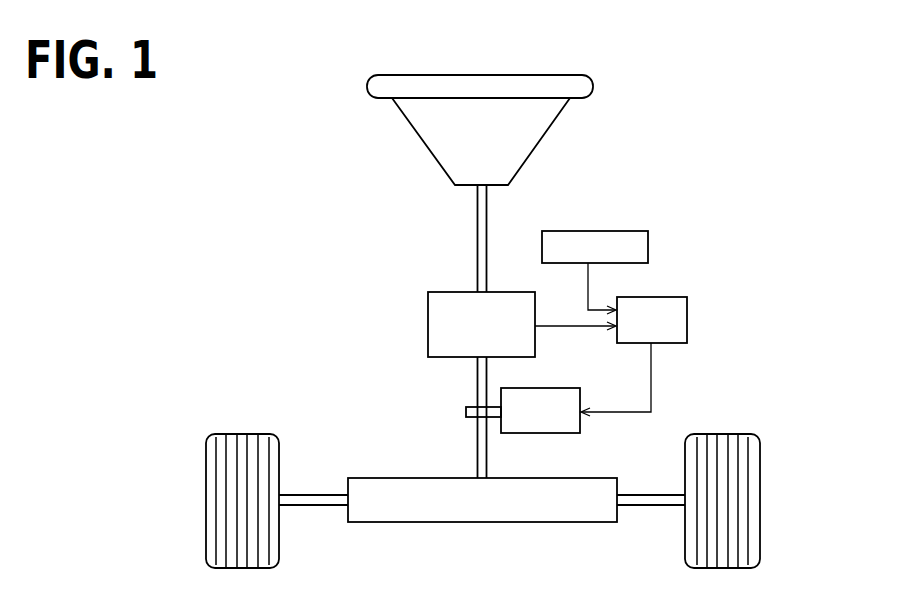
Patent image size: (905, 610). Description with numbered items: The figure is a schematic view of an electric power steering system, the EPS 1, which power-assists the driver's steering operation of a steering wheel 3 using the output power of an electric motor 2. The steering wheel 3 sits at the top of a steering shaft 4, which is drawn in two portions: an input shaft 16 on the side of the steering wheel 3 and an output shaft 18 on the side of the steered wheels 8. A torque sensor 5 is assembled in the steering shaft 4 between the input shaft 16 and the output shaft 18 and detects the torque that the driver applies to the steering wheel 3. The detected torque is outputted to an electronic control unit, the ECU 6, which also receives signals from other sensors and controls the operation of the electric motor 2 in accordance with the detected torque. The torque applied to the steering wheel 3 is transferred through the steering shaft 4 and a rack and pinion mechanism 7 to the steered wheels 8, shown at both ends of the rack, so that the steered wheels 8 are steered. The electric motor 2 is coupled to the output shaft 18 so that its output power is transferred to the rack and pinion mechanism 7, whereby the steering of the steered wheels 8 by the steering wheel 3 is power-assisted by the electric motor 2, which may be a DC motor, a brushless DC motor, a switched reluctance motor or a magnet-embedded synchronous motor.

The EPS 1 is at (296, 162).
The electric motor 2 is at (565, 433).
The steering wheel 3 is at (517, 86).
The steering shaft 4 is at (422, 331).
The torque sensor 5 is at (428, 314).
The electronic control unit (ECU) 6 is at (688, 318).
The rack and pinion mechanism 7 is at (527, 505).
The steered wheels 8 is at (745, 518).
The input shaft 16 is at (477, 233).
The output shaft 18 is at (477, 378).